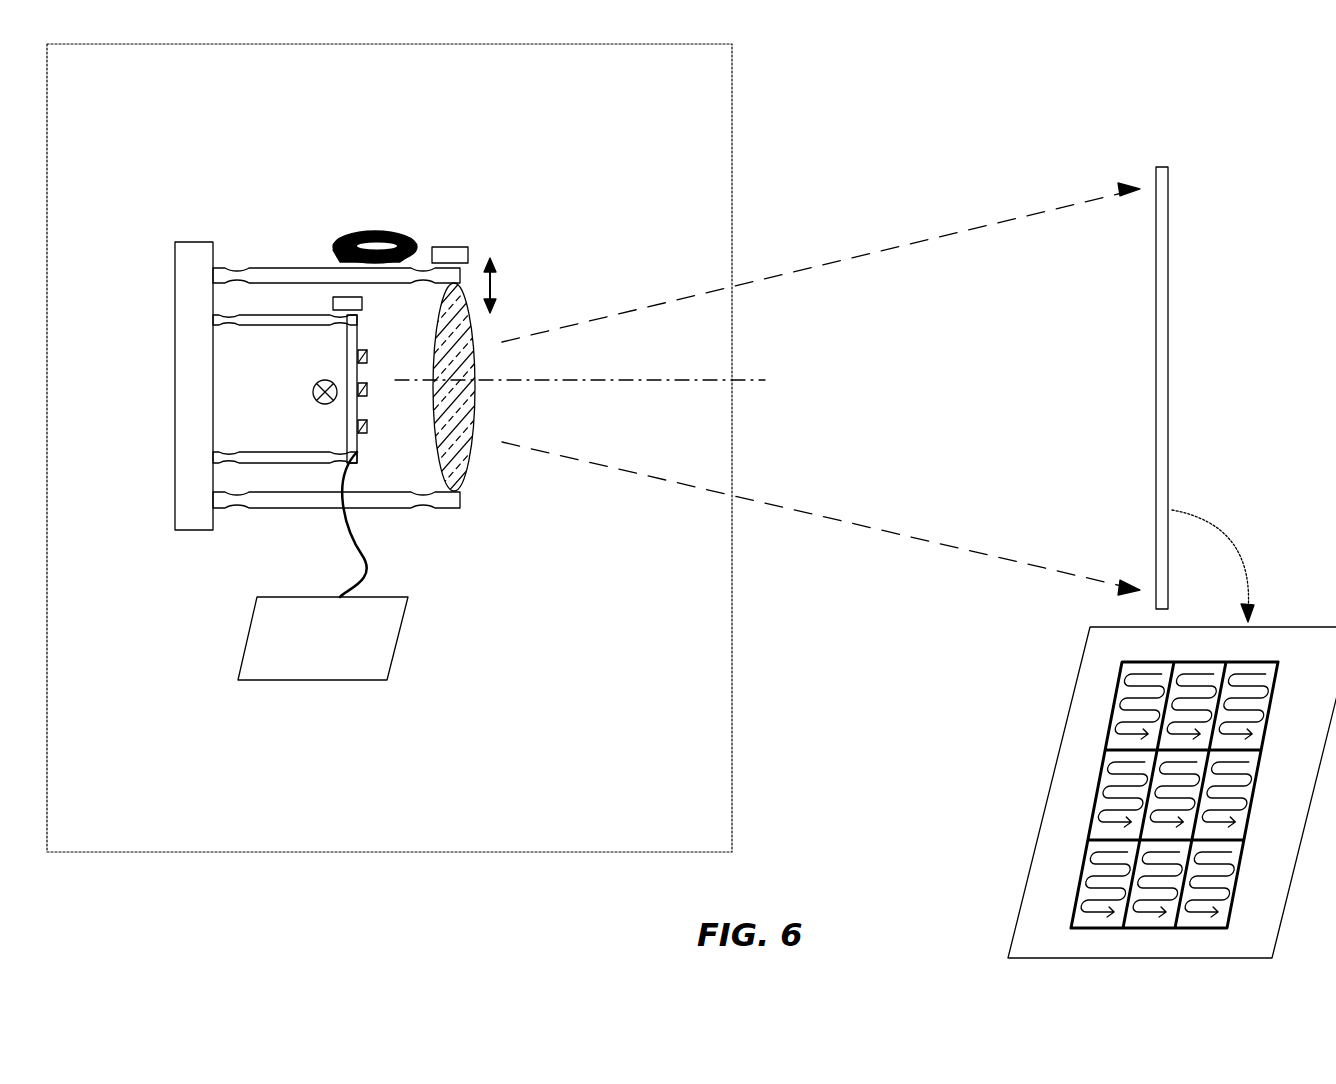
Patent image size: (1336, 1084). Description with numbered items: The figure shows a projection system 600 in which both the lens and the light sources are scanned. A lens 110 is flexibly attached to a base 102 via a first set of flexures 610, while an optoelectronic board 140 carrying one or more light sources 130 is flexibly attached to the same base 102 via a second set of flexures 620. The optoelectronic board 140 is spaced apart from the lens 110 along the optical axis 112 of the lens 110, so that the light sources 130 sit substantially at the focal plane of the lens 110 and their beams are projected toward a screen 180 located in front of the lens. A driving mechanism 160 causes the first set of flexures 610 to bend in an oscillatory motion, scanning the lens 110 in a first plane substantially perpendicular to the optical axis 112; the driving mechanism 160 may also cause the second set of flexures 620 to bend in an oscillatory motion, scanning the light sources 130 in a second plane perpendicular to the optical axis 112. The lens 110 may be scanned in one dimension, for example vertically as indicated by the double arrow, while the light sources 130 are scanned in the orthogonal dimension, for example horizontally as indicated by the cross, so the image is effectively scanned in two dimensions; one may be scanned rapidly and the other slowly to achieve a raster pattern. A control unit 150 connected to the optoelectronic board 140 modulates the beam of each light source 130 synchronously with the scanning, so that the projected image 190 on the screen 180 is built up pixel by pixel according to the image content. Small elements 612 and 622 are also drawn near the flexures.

The base 102 is at (190, 375).
The lens 110 is at (468, 410).
The optical axis 112 is at (640, 378).
The light sources 130 is at (368, 428).
The optoelectronic board 140 is at (357, 342).
The control unit 150 is at (340, 668).
The driving mechanism 160 is at (380, 230).
The screen 180 is at (1157, 335).
The projected image 190 is at (1120, 685).
The projection system 600 is at (733, 590).
The first set of flexures 610 is at (268, 278).
The magnet 612 is at (455, 255).
The second set of flexures 620 is at (262, 325).
The position sensor 622 is at (337, 297).